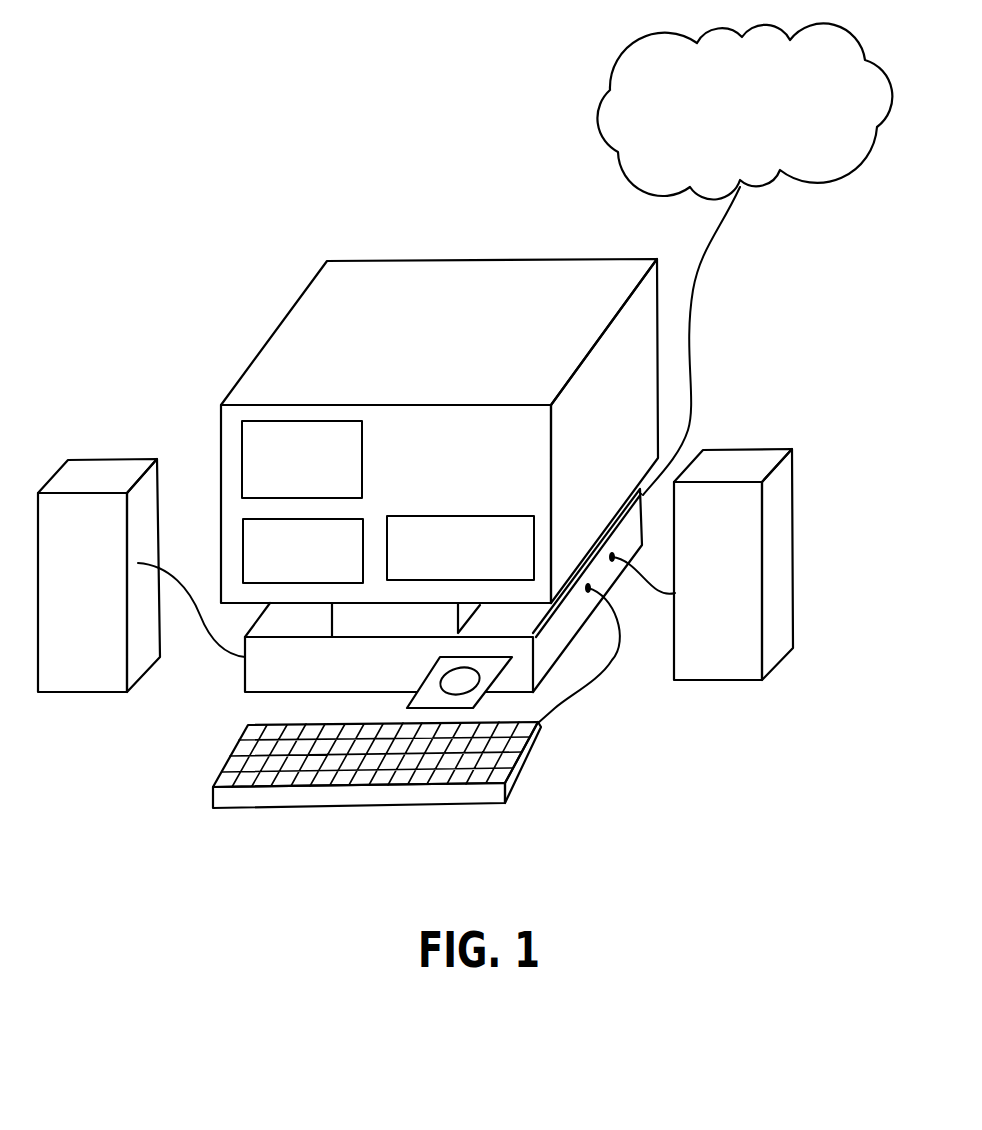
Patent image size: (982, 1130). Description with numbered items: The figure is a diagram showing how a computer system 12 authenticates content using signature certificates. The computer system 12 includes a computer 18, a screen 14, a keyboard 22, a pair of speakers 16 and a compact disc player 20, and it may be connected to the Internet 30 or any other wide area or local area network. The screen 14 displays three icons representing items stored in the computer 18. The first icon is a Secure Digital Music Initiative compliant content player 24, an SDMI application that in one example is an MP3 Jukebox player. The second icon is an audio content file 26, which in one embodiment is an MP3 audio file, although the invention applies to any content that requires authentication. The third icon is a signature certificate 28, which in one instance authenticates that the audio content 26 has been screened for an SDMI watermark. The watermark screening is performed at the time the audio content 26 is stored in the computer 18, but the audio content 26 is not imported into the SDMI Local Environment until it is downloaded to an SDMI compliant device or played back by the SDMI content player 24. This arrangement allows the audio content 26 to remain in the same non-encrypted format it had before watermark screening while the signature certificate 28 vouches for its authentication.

The computer system 12 is at (155, 105).
The screen 14 is at (405, 282).
The speakers 16 is at (87, 477).
The computer 18 is at (245, 680).
The compact disc player 20 is at (430, 668).
The keyboard 22 is at (532, 752).
The SDMI content player 24 is at (362, 436).
The audio content file 26 is at (352, 517).
The signature certificate 28 is at (441, 516).
The Internet 30 is at (622, 50).